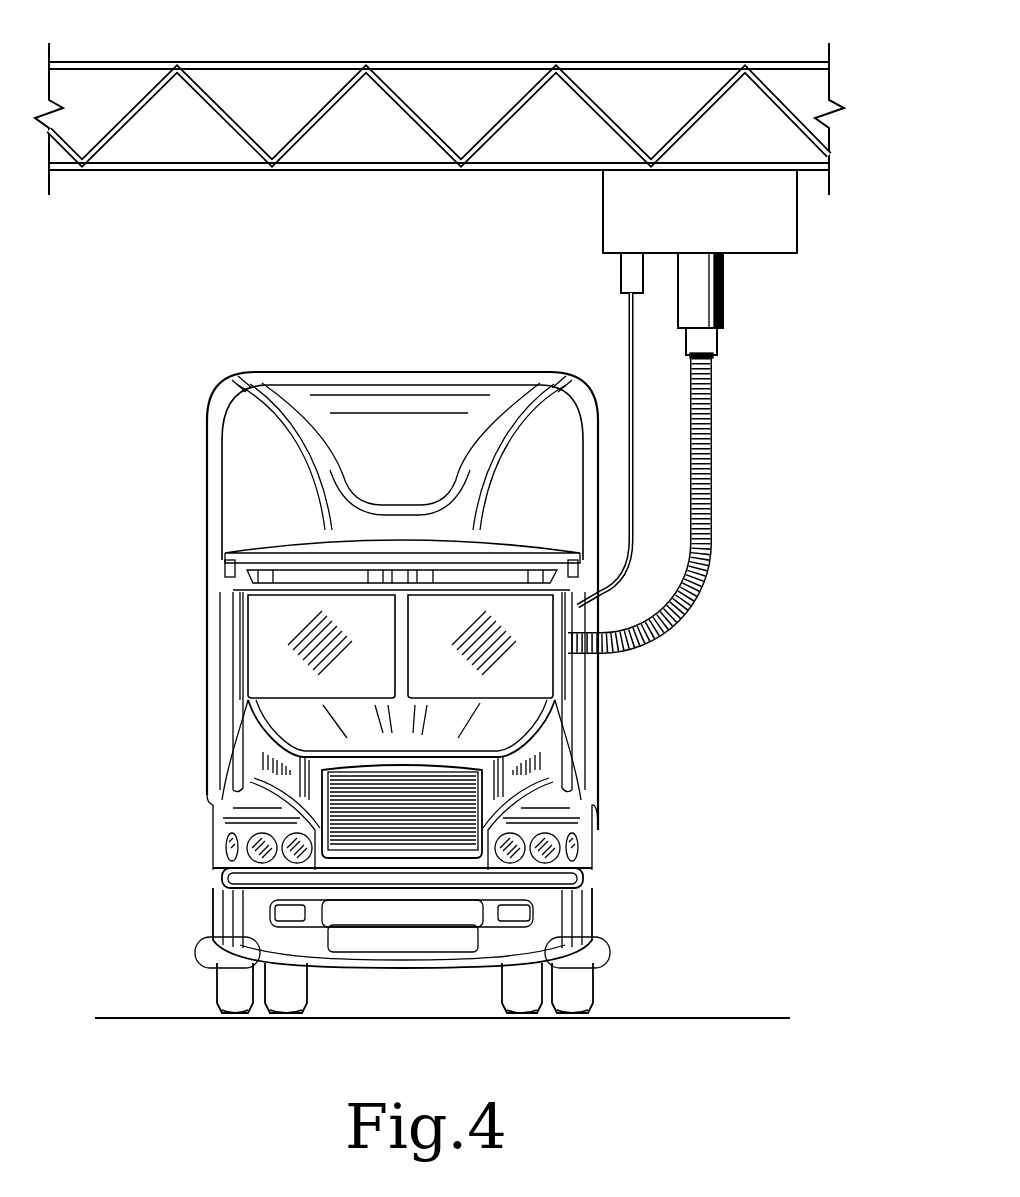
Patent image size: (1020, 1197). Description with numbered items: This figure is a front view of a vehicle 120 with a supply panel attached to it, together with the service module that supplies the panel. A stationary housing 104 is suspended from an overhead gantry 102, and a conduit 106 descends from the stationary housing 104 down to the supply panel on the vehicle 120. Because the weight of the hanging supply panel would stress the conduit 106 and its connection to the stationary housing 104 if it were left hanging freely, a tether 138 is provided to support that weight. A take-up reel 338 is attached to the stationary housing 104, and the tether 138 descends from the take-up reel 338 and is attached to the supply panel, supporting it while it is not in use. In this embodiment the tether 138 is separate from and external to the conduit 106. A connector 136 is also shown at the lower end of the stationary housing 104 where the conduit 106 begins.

The overhead gantry 102 is at (615, 61).
The stationary housing 104 is at (797, 229).
The take-up reel 338 is at (620, 270).
The hose connector 136 is at (723, 289).
The tether 138 is at (628, 338).
The conduit 106 is at (713, 425).
The vehicle 120 is at (598, 843).